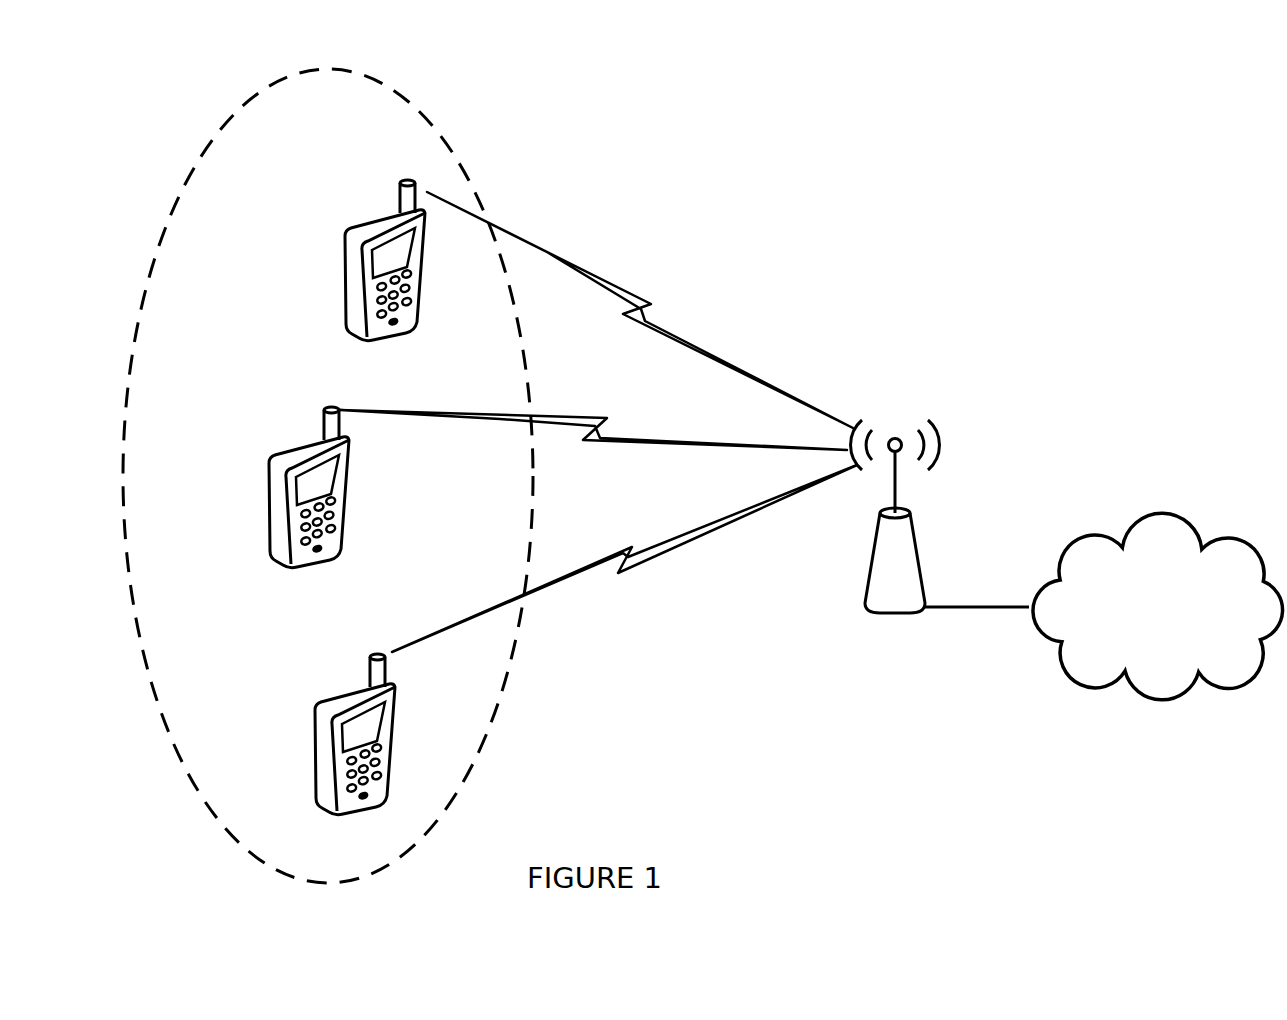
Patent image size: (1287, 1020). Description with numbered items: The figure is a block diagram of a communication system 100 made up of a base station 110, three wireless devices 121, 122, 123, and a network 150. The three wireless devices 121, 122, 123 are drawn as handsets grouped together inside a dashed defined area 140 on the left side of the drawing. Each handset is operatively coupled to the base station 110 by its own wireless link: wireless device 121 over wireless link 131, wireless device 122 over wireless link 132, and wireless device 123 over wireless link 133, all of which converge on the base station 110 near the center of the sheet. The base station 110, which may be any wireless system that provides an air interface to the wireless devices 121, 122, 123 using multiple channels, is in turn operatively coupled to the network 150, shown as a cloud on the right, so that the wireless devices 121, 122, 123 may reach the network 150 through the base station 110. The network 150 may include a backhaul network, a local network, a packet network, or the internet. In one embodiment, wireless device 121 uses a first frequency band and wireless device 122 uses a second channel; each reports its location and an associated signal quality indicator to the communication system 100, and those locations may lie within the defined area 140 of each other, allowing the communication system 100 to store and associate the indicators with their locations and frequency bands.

The communication system 100 is at (770, 110).
The base station 110 is at (890, 622).
The wireless device 121 is at (375, 342).
The wireless device 122 is at (337, 816).
The wireless device 123 is at (288, 570).
The wireless link 131 is at (692, 342).
The wireless link 132 is at (698, 532).
The wireless link 133 is at (650, 437).
The defined area 140 is at (202, 797).
The network 150 is at (1185, 638).